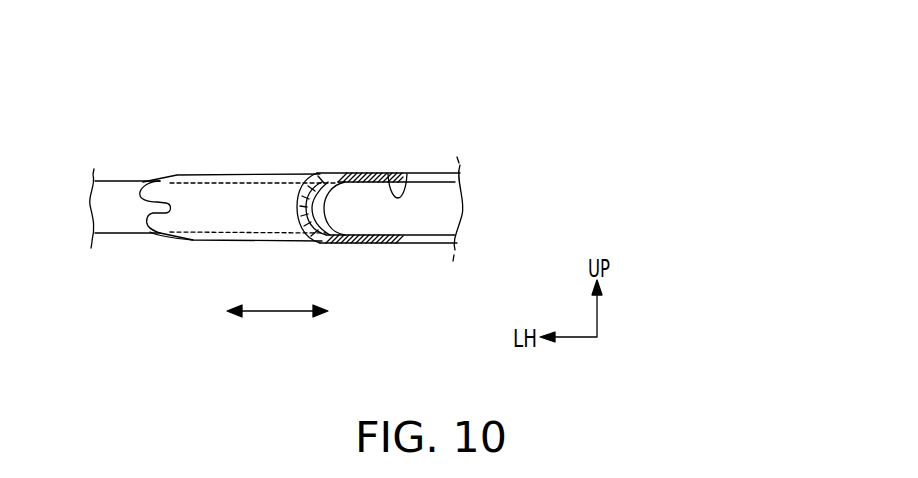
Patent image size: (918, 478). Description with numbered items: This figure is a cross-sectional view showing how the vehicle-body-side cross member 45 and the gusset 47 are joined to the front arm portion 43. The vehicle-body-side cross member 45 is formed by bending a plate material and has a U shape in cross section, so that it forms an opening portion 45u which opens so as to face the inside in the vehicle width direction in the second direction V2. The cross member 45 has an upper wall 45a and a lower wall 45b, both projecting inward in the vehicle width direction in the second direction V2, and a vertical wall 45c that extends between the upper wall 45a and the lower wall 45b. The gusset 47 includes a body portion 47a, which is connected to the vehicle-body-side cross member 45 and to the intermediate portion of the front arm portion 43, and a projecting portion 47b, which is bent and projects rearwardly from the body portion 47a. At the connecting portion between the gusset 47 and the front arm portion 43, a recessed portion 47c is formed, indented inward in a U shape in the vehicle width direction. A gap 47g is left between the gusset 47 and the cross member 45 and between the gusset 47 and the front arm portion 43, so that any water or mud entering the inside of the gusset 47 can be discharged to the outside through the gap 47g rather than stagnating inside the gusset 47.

The front arm portion 43 is at (115, 179).
The vehicle-body-side cross member 45 is at (417, 102).
The upper wall 45a is at (377, 172).
The lower wall 45b is at (357, 243).
The vertical wall 45c is at (333, 198).
The opening portion 45u is at (408, 175).
The gusset 47 is at (232, 102).
The body portion 47a is at (204, 176).
The projecting portion 47b is at (188, 212).
The recessed portion 47c is at (144, 206).
The gap 47g is at (300, 208).
The second direction V2 is at (278, 312).